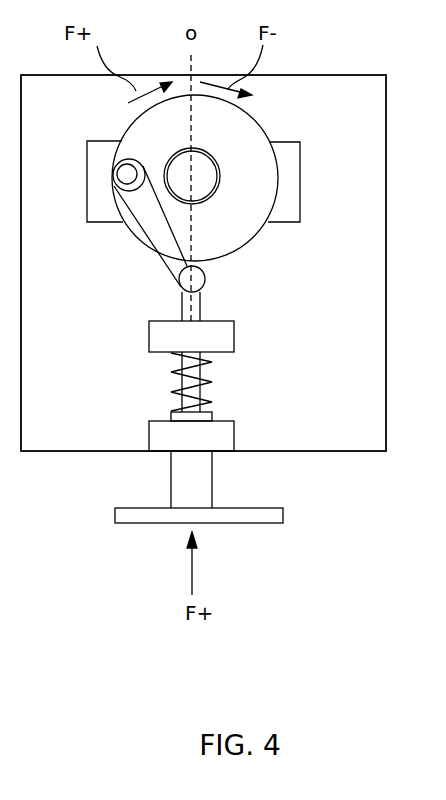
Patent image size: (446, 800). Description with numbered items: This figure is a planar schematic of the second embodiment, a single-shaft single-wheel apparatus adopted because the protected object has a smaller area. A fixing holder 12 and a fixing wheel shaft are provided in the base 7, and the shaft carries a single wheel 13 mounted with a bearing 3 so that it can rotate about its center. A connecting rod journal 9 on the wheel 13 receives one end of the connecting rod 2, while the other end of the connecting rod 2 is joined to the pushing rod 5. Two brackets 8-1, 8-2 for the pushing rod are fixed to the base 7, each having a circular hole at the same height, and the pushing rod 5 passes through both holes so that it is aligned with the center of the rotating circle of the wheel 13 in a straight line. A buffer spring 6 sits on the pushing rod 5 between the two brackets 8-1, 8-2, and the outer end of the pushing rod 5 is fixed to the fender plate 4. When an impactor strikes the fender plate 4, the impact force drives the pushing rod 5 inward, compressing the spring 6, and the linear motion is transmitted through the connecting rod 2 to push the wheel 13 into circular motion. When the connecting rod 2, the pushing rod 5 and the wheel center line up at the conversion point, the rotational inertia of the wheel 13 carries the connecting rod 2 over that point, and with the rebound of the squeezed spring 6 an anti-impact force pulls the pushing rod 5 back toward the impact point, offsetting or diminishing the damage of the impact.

The base 7 is at (370, 92).
The fixing holder 12 is at (83, 145).
The wheel 13 is at (250, 214).
The bearing 3 is at (208, 178).
The connecting rod journal 9 is at (117, 176).
The connecting rod 2 is at (150, 203).
The bracket for pushing rod 8-2 is at (234, 346).
The spring 6 is at (218, 370).
The bracket for pushing rod 8-1 is at (218, 435).
The pushing rod 5 is at (172, 468).
The fender plate 4 is at (283, 510).